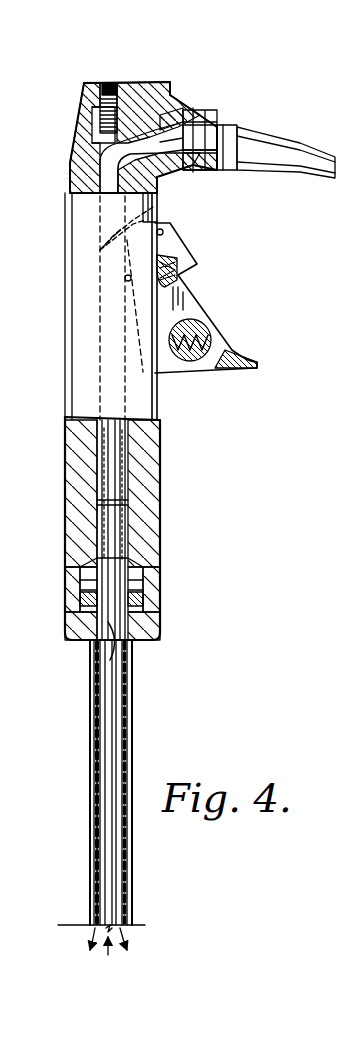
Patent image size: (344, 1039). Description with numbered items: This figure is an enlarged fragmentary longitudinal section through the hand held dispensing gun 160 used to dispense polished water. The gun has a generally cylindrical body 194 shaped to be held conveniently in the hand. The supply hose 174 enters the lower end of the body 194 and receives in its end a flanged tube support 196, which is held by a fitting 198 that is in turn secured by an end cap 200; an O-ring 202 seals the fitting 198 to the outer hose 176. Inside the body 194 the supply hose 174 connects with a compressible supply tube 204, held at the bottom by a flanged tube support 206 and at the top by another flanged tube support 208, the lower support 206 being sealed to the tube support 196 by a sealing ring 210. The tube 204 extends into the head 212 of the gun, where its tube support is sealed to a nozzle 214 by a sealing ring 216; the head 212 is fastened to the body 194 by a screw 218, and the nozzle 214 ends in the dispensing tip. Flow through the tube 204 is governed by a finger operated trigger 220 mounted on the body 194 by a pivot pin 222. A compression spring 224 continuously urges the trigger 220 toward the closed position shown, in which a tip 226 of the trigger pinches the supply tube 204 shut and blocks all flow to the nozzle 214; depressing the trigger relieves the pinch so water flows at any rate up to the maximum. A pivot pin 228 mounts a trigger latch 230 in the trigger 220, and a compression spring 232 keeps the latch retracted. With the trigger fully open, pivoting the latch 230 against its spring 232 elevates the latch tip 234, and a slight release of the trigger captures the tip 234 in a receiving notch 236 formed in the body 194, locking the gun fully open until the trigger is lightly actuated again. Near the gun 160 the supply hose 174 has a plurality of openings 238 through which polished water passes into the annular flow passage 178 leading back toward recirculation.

The dispensing gun 160 is at (273, 447).
The supply hose 174 is at (122, 697).
The outer hose 176 is at (130, 730).
The annular flow passage 178 is at (122, 752).
The body 194 is at (75, 354).
The flanged tube support 196 is at (127, 523).
The fitting 198 is at (128, 557).
The end cap 200 is at (150, 578).
The O-ring 202 is at (150, 605).
The compressible supply tube 204 is at (127, 442).
The flanged tube support 206 is at (127, 478).
The flanged tube support 208 is at (186, 122).
The sealing ring 210 is at (127, 500).
The head 212 is at (160, 93).
The nozzle 214 is at (258, 165).
The sealing ring 216 is at (237, 124).
The screw 218 is at (111, 88).
The trigger 220 is at (232, 356).
The pivot pin 222 is at (124, 280).
The compression spring 224 is at (200, 333).
The tip 226 is at (100, 250).
The pivot pin 228 is at (164, 231).
The trigger latch 230 is at (178, 252).
The compression spring 232 is at (188, 282).
The latch tip 234 is at (117, 233).
The receiving notch 236 is at (155, 208).
The openings 238 is at (130, 663).